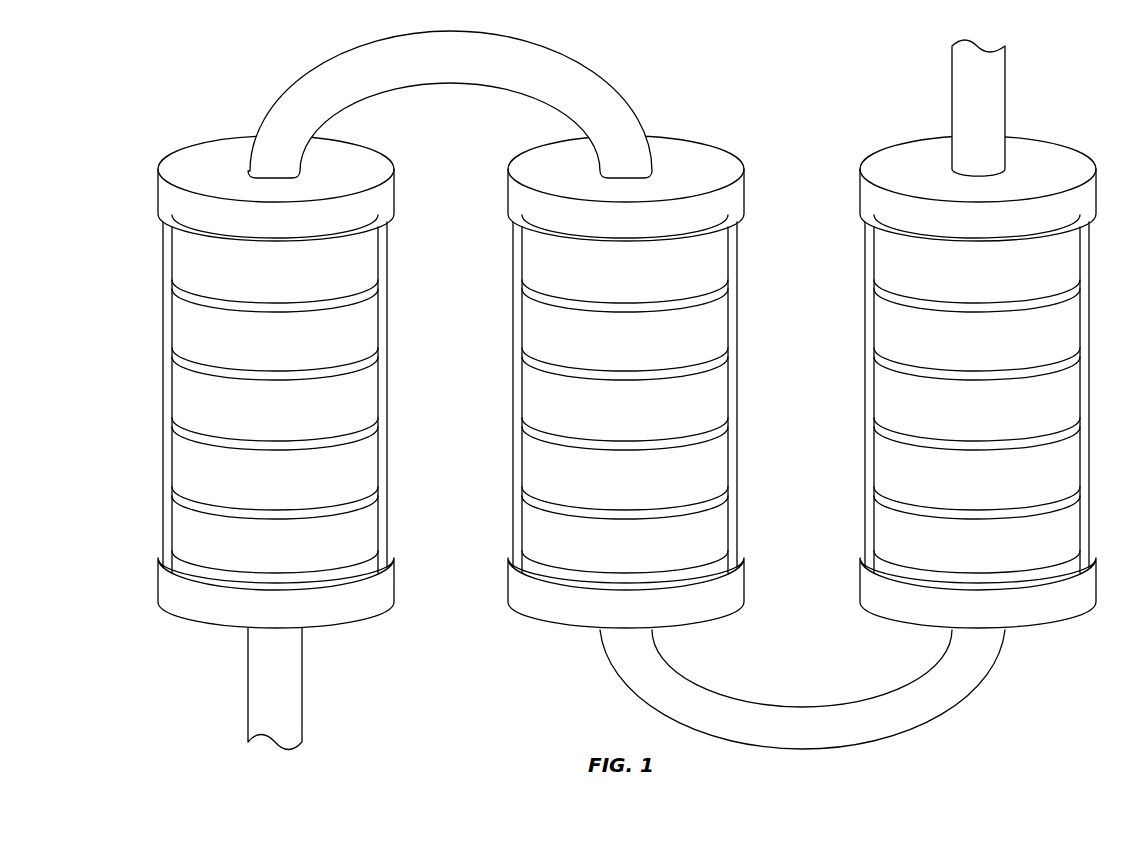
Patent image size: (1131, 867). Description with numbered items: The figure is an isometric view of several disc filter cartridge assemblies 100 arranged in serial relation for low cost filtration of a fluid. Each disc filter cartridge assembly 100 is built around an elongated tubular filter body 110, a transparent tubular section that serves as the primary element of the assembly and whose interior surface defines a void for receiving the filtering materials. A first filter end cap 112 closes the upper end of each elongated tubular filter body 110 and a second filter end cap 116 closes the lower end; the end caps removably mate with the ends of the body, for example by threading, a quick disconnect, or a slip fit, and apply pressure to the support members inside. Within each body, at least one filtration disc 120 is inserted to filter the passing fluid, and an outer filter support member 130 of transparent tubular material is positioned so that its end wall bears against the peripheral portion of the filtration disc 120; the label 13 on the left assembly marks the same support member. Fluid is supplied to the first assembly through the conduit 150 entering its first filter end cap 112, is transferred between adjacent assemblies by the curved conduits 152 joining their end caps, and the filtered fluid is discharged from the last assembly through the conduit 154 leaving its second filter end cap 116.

The disc filter cartridge assembly 100 is at (171, 130).
The elongated tubular filter body 110 is at (163, 386).
The first filter end cap 112 is at (232, 163).
The second filter end cap 116 is at (186, 616).
The filtration disc 120 is at (198, 505).
The outer filter support member 130 is at (548, 467).
The spacer segment 13 is at (198, 467).
The inlet conduit 150 is at (997, 104).
The connecting conduit 152 is at (541, 59).
The outlet conduit 154 is at (303, 690).